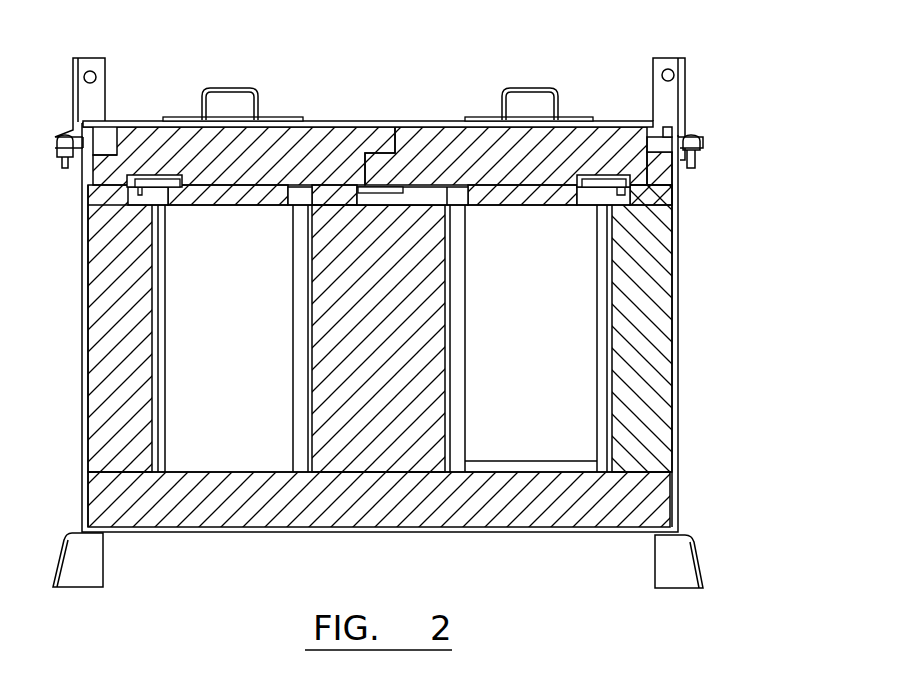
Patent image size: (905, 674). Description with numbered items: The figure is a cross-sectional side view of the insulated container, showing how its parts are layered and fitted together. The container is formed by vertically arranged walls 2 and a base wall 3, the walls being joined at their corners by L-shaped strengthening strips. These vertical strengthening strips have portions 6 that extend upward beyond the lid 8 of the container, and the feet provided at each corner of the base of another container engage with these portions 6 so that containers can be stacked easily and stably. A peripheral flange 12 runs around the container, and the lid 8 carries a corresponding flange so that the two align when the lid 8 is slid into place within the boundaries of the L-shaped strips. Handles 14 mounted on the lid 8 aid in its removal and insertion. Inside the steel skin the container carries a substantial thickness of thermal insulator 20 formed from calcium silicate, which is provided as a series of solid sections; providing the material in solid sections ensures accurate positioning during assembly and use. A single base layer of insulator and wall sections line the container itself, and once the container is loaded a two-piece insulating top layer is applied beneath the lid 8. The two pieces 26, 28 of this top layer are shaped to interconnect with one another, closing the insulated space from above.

The vertically arranged walls 2 is at (678, 299).
The base wall 3 is at (548, 533).
The portions 6 is at (673, 106).
The lid 8 is at (451, 121).
The peripheral flange 12 is at (704, 147).
The handles 14 is at (537, 87).
The thermal insulator 20 is at (295, 507).
The insulating top layer piece 26 is at (323, 155).
The insulating top layer piece 28 is at (604, 140).